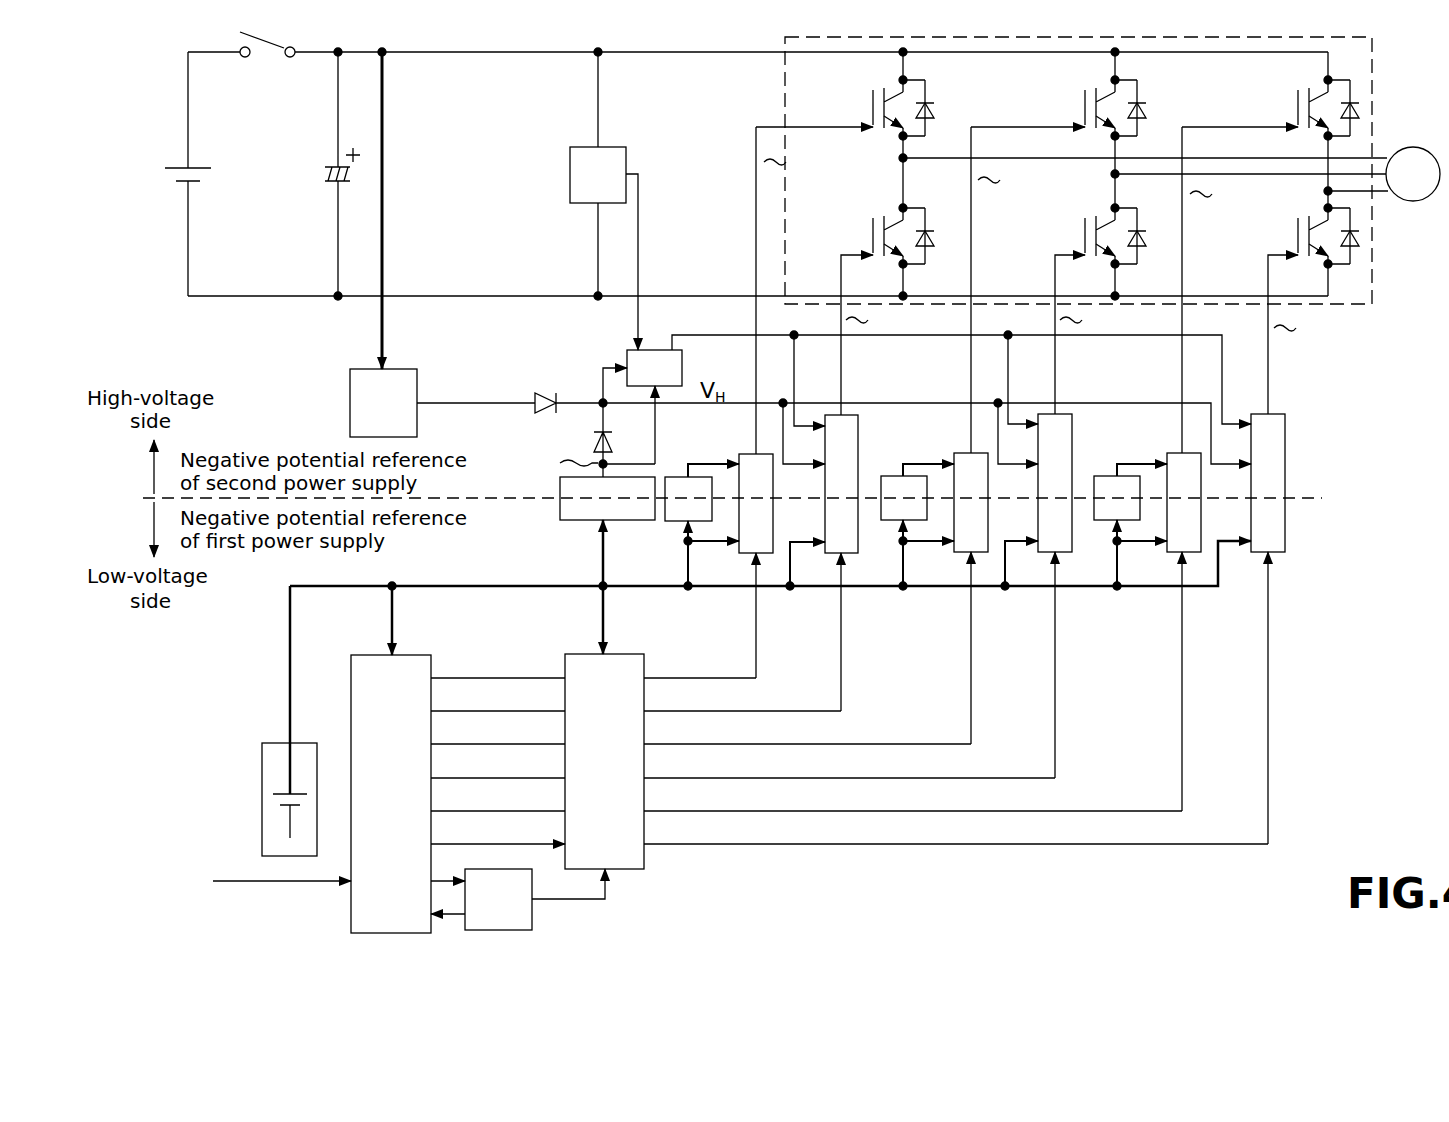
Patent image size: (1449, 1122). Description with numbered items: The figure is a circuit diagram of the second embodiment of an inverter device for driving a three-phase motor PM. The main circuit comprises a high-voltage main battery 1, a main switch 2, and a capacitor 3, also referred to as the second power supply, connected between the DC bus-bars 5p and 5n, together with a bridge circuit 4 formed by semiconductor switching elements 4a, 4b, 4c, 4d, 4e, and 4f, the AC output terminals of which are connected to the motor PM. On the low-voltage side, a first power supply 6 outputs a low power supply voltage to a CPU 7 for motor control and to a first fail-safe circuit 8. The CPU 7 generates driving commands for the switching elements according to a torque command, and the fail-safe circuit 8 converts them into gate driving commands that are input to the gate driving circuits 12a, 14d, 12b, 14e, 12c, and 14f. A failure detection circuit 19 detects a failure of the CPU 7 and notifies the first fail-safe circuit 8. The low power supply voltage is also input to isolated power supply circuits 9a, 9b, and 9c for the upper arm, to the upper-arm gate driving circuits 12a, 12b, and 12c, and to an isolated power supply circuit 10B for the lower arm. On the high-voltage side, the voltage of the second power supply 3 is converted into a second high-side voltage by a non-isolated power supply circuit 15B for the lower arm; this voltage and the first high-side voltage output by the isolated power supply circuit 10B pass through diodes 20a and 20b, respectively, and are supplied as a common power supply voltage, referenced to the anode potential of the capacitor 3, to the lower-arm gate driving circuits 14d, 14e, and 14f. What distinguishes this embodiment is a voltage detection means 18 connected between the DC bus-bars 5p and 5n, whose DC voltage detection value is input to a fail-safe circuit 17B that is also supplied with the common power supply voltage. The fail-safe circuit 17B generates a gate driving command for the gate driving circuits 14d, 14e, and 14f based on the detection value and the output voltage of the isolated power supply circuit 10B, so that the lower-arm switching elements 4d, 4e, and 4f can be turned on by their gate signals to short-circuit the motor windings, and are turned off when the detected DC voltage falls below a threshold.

The high-voltage main battery 1 is at (198, 160).
The main switch 2 is at (270, 34).
The capacitor 3 is at (327, 188).
The bridge circuit 4 is at (1372, 262).
The semiconductor switching element 4a is at (862, 98).
The semiconductor switching element 4b is at (1078, 98).
The semiconductor switching element 4c is at (1290, 98).
The semiconductor switching element 4d is at (862, 226).
The semiconductor switching element 4e is at (1078, 230).
The semiconductor switching element 4f is at (1290, 230).
The DC bus-bar 5p is at (680, 62).
The DC bus-bar 5n is at (680, 294).
The first power supply 6 is at (266, 770).
The CPU for motor control 7 is at (360, 916).
The first fail-safe circuit 8 is at (630, 858).
The isolated power supply circuit for upper arm 9a is at (666, 535).
The isolated power supply circuit for upper arm 9b is at (883, 535).
The isolated power supply circuit for upper arm 9c is at (1097, 535).
The isolated power supply circuit for lower arm 10B is at (561, 516).
The gate driving circuit for upper arm 12a is at (763, 518).
The gate driving circuit for upper arm 12b is at (976, 518).
The gate driving circuit for upper arm 12c is at (1190, 518).
The gate driving circuit for lower arm 14d is at (858, 426).
The gate driving circuit for lower arm 14e is at (1074, 433).
The gate driving circuit for lower arm 14f is at (1286, 431).
The non-isolated power supply circuit for lower arm 15B is at (360, 400).
The fail-safe circuit 17B is at (632, 350).
The voltage detection means 18 is at (578, 156).
The failure detection circuit 19 is at (524, 918).
The diode 20a is at (542, 389).
The diode 20b is at (596, 438).